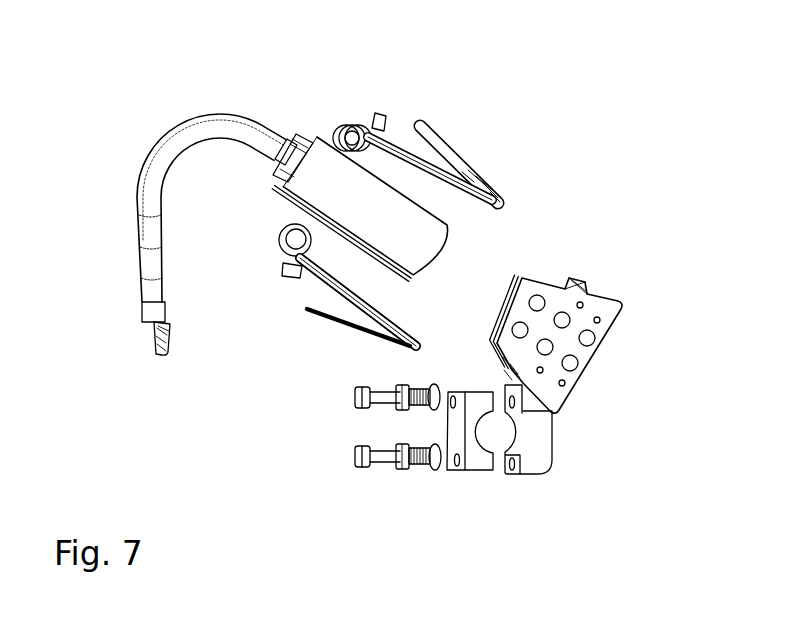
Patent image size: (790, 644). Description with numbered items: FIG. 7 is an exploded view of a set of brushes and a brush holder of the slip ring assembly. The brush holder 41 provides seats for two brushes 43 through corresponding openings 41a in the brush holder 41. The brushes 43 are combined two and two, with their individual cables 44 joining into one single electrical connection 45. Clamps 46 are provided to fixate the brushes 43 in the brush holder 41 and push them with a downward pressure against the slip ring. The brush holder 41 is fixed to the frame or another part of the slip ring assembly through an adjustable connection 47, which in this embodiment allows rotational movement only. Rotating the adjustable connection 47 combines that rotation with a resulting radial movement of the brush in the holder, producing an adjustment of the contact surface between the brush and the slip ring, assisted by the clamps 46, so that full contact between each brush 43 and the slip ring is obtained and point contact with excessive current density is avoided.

The brush holder 41 is at (613, 294).
The openings 41a is at (518, 293).
The brush 43 is at (282, 190).
The cable 44 is at (137, 190).
The electrical connection 45 is at (142, 313).
The clamp 46 is at (403, 137).
The adjustable connection 47 is at (523, 493).